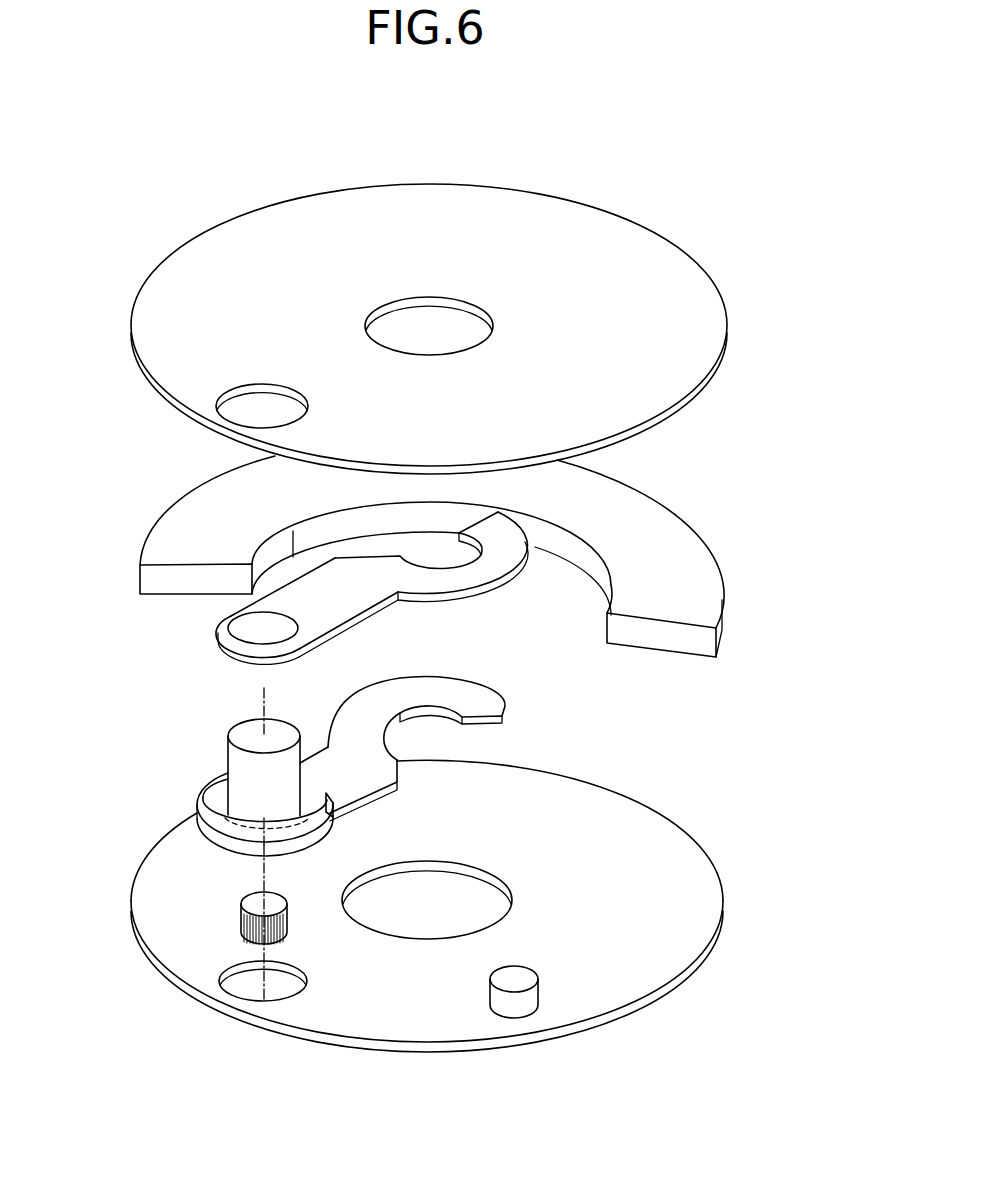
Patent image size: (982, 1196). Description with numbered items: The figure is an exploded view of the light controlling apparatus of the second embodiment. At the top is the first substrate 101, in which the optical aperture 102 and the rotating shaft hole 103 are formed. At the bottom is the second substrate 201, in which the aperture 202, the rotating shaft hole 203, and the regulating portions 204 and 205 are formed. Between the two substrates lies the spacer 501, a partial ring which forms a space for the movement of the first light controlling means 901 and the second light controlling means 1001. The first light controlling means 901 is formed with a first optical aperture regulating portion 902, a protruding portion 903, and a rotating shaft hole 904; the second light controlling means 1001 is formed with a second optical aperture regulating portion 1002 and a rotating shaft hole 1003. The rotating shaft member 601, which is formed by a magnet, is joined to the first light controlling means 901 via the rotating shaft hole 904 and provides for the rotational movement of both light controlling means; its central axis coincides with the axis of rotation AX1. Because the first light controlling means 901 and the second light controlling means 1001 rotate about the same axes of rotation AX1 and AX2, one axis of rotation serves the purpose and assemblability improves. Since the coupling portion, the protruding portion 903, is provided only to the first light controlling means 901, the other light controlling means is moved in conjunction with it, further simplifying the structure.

The first substrate 101 is at (665, 283).
The optical aperture 102 is at (486, 345).
The rotating shaft hole 103 is at (247, 420).
The spacer 501 is at (680, 597).
The second light controlling means 1001 is at (406, 568).
The second optical aperture regulating portion 1002 is at (455, 531).
The rotating shaft hole 1003 is at (255, 642).
The second substrate 201 is at (650, 868).
The aperture 202 is at (509, 916).
The rotating shaft hole 203 is at (254, 986).
The regulating portion 204 is at (522, 993).
The regulating portion 205 is at (260, 891).
The rotating shaft member 601 is at (251, 737).
The first light controlling means 901 is at (482, 698).
The first optical aperture regulating portion 902 is at (428, 707).
The protruding portion 903 is at (200, 817).
The rotating shaft hole 904 is at (257, 818).
The axis of rotation AX1 is at (263, 851).
The axis of rotation AX2 is at (262, 878).